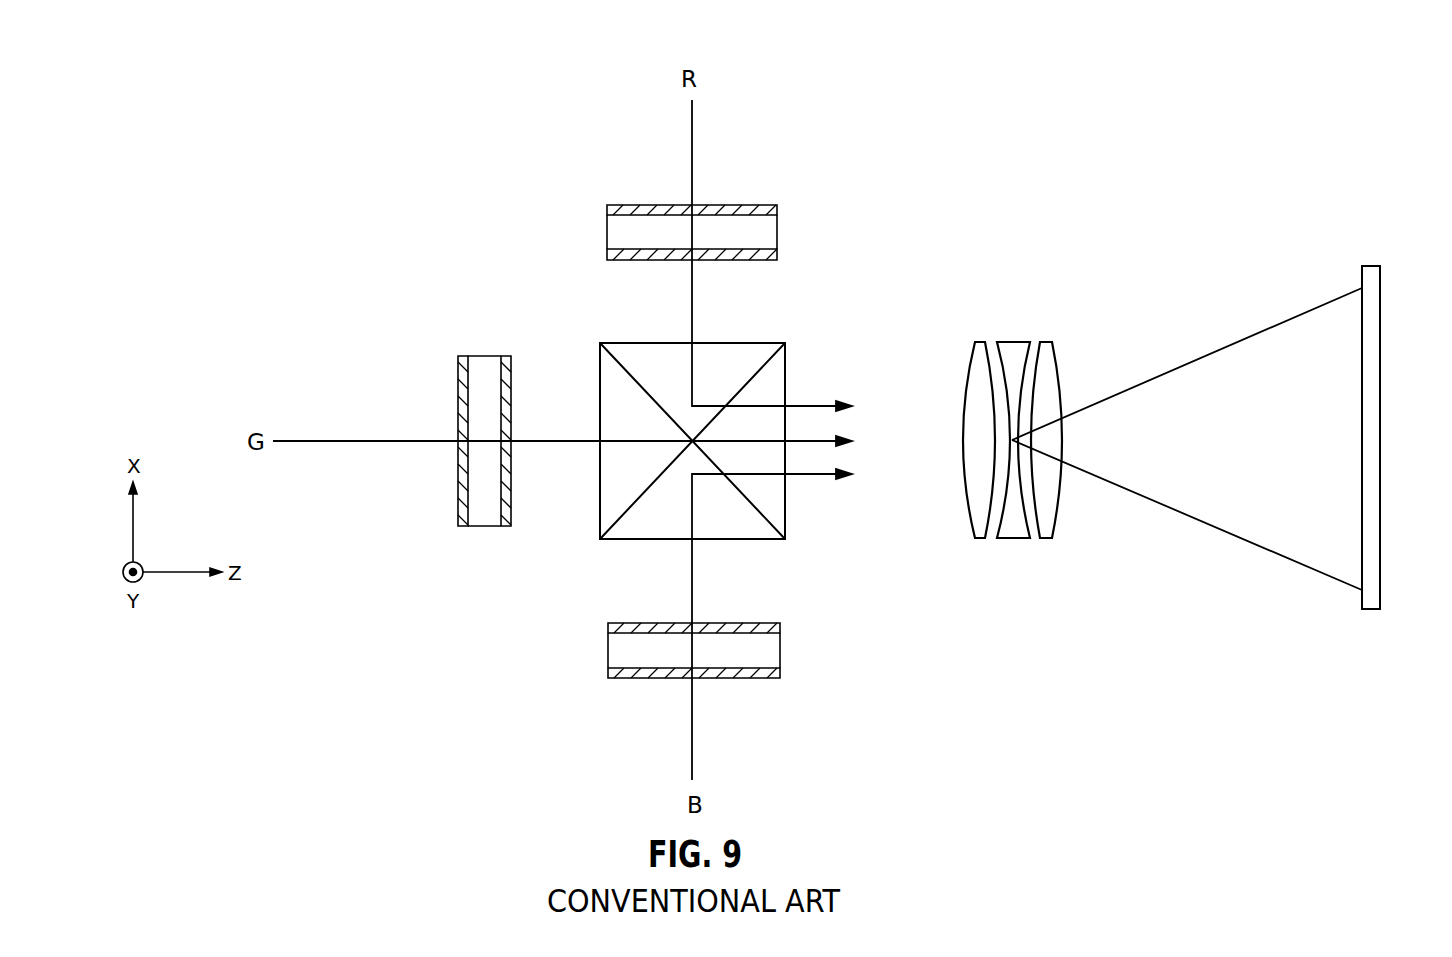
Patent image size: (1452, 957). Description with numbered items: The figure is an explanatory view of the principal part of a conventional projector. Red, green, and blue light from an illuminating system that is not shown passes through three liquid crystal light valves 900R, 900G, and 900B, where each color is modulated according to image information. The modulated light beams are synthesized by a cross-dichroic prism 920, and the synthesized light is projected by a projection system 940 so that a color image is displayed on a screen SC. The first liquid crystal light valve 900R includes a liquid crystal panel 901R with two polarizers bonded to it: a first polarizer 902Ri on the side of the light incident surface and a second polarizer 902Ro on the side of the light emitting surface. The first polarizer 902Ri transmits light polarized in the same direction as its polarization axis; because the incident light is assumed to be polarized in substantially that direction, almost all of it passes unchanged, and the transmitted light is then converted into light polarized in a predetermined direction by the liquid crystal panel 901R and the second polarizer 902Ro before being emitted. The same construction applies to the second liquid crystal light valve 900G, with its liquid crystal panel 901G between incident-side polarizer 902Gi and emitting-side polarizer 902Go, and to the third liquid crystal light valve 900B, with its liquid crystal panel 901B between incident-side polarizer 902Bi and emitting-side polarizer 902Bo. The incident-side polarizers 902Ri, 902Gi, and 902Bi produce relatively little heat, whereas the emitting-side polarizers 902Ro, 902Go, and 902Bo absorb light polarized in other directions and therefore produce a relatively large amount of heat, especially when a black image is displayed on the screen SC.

The first liquid crystal light valve 900R is at (905, 183).
The first polarizer 902Ri is at (778, 208).
The liquid crystal panel 901R is at (778, 230).
The second polarizer 902Ro is at (778, 253).
The second liquid crystal light valve 900G is at (580, 588).
The polarizer on the side of the light incident surface 902Gi is at (462, 528).
The liquid crystal panel 901G is at (484, 528).
The polarizer on the side of the light emitting surface 902Go is at (508, 528).
The third liquid crystal light valve 900B is at (910, 595).
The polarizer on the side of the light emitting surface 902Bo is at (781, 627).
The liquid crystal panel 901B is at (781, 650).
The polarizer on the side of the light incident surface 902Bi is at (781, 672).
The cross-dichroic prism 920 is at (786, 368).
The projection system 940 is at (1015, 342).
The screen SC is at (1381, 297).